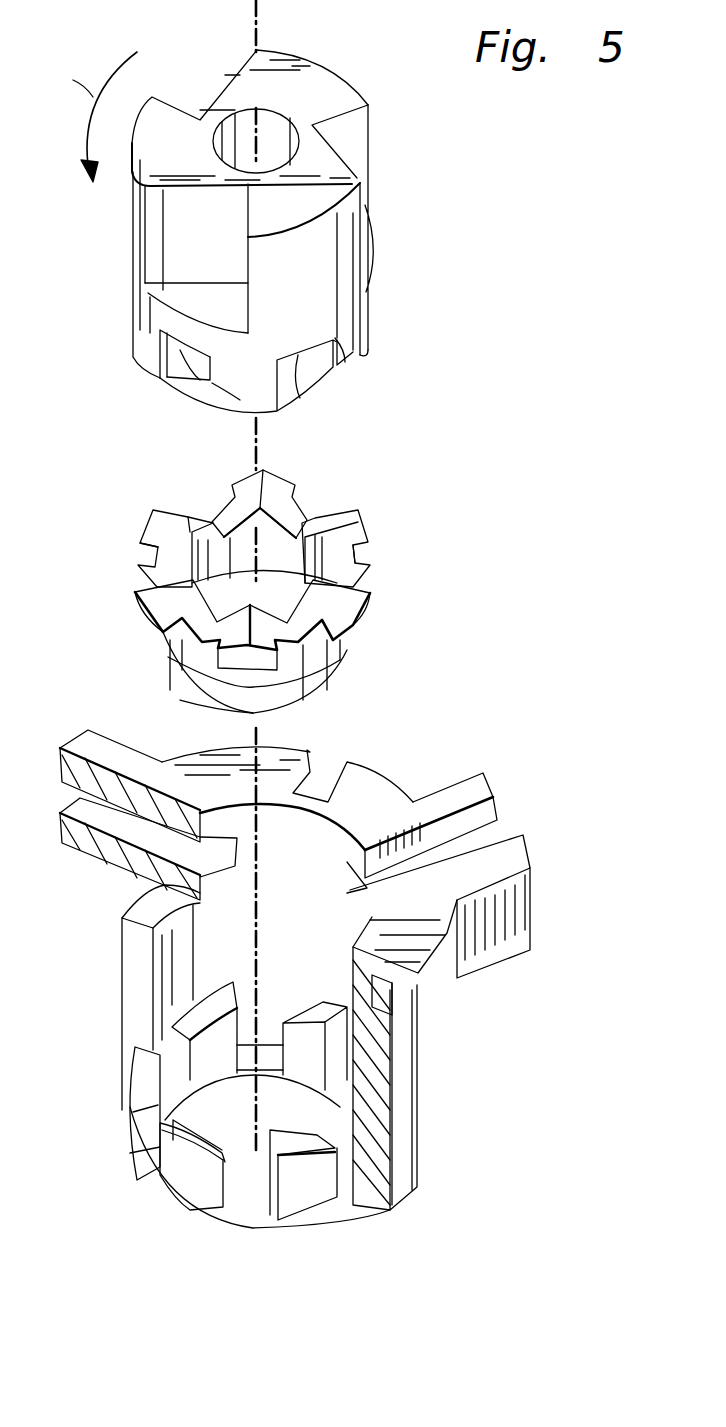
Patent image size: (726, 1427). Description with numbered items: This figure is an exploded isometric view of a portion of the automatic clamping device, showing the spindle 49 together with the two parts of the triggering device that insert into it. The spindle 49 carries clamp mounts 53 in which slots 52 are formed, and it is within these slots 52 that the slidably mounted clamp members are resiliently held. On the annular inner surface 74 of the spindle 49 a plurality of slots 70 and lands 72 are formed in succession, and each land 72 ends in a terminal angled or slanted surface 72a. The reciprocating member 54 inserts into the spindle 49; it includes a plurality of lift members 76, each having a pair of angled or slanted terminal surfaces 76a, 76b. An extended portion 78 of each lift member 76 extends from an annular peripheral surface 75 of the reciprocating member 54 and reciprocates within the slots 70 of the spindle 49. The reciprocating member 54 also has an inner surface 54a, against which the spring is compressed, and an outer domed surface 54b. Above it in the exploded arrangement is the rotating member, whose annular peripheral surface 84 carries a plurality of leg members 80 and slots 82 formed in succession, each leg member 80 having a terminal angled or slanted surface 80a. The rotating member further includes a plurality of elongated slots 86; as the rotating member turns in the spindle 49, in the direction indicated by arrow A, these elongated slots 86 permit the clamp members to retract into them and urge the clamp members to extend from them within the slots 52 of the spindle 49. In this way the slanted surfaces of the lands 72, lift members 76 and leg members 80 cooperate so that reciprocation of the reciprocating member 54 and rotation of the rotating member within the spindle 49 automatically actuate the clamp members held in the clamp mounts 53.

The spindle 49 is at (415, 1112).
The slots 52 is at (490, 813).
The clamp mounts 53 is at (80, 737).
The reciprocating member 54 is at (345, 662).
The inner surface 54a is at (248, 532).
The outer domed surface 54b is at (215, 708).
The slots 70 is at (137, 1168).
The lands 72 is at (203, 987).
The terminal angled surface 72a is at (310, 1008).
The annular inner surface 74 is at (320, 862).
The annular peripheral surface 75 is at (193, 653).
The lift members 76 is at (150, 522).
The angled terminal surface 76a is at (343, 515).
The angled terminal surface 76b is at (358, 538).
The extended portion 78 is at (148, 565).
The leg members 80 is at (363, 317).
The terminal angled surface 80a is at (237, 402).
The slots 82 is at (192, 347).
The annular peripheral surface 84 is at (293, 260).
The elongated slots 86 is at (283, 50).
The rotation direction A is at (99, 117).